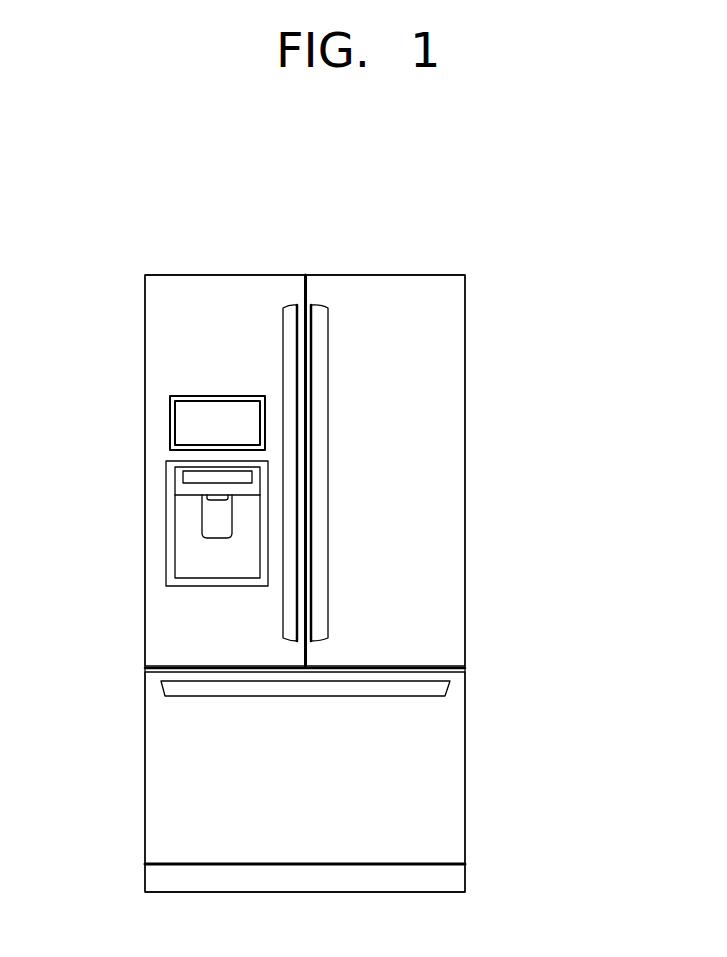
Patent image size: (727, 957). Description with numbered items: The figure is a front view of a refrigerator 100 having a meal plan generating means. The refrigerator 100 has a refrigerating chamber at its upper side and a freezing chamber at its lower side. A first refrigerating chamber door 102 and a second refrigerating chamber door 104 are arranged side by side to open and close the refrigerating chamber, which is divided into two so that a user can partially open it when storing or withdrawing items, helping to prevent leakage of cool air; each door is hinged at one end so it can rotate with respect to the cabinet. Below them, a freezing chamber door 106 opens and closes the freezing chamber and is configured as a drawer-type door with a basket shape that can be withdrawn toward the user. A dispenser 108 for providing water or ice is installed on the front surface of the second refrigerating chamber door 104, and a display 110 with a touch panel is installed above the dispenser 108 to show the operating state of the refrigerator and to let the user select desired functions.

The refrigerator 100 is at (455, 258).
The first refrigerating chamber door 102 is at (476, 441).
The second refrigerating chamber door 104 is at (138, 342).
The freezing chamber door 106 is at (450, 767).
The dispenser 108 is at (161, 545).
The display 110 is at (158, 427).